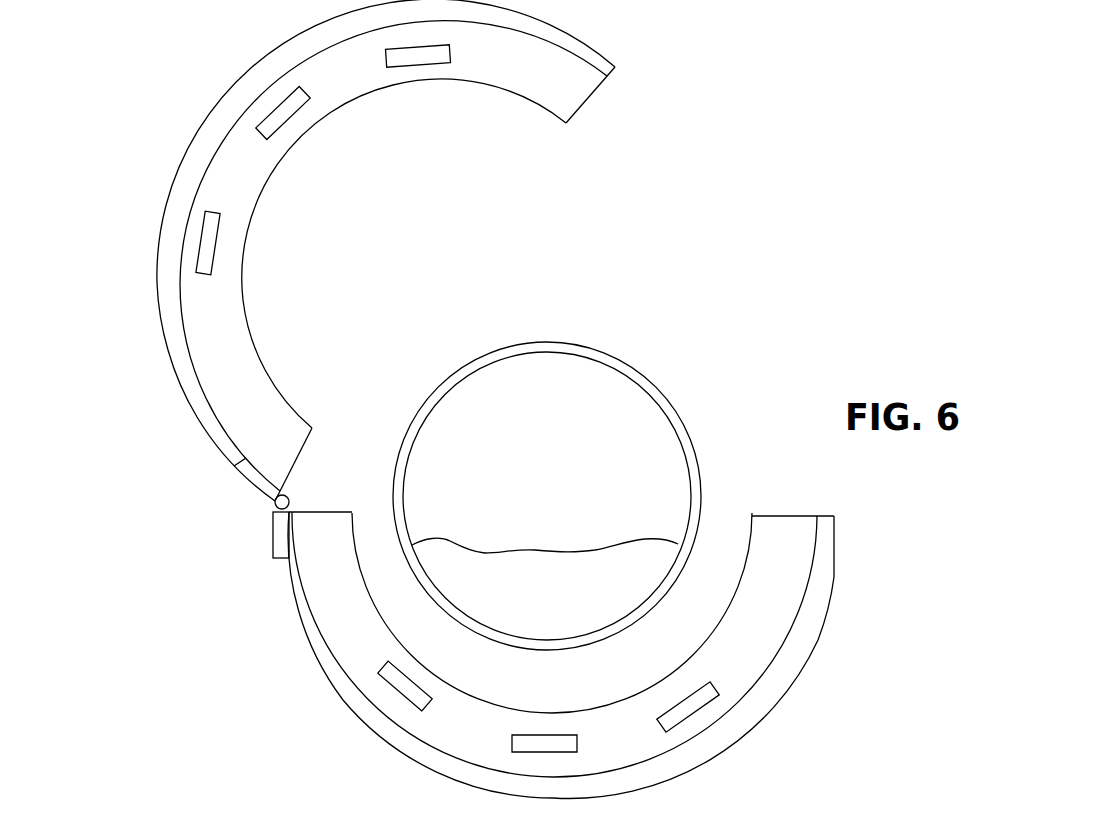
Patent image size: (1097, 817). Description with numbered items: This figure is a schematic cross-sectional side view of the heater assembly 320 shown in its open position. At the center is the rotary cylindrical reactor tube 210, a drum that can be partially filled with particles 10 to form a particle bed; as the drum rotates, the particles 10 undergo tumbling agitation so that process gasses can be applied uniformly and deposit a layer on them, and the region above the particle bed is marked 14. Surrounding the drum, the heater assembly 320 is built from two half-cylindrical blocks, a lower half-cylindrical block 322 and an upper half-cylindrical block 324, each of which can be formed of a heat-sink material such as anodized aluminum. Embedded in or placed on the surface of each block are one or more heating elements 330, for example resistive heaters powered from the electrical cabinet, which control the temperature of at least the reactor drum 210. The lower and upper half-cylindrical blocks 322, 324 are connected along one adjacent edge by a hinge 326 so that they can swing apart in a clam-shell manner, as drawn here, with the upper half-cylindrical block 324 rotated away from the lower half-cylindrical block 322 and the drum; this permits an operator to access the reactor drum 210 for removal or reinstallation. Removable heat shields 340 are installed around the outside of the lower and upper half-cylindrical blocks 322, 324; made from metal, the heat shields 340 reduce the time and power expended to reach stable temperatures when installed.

The particles 10 is at (562, 605).
The headspace 14 is at (551, 493).
The rotary cylindrical reactor tube 210 is at (663, 400).
The heater assembly 320 is at (439, 390).
The lower half-cylindrical block 322 is at (320, 592).
The upper half-cylindrical block 324 is at (255, 432).
The hinge 326 is at (273, 538).
The heating element 330 is at (378, 693).
The removable heat shield 340 is at (163, 241).